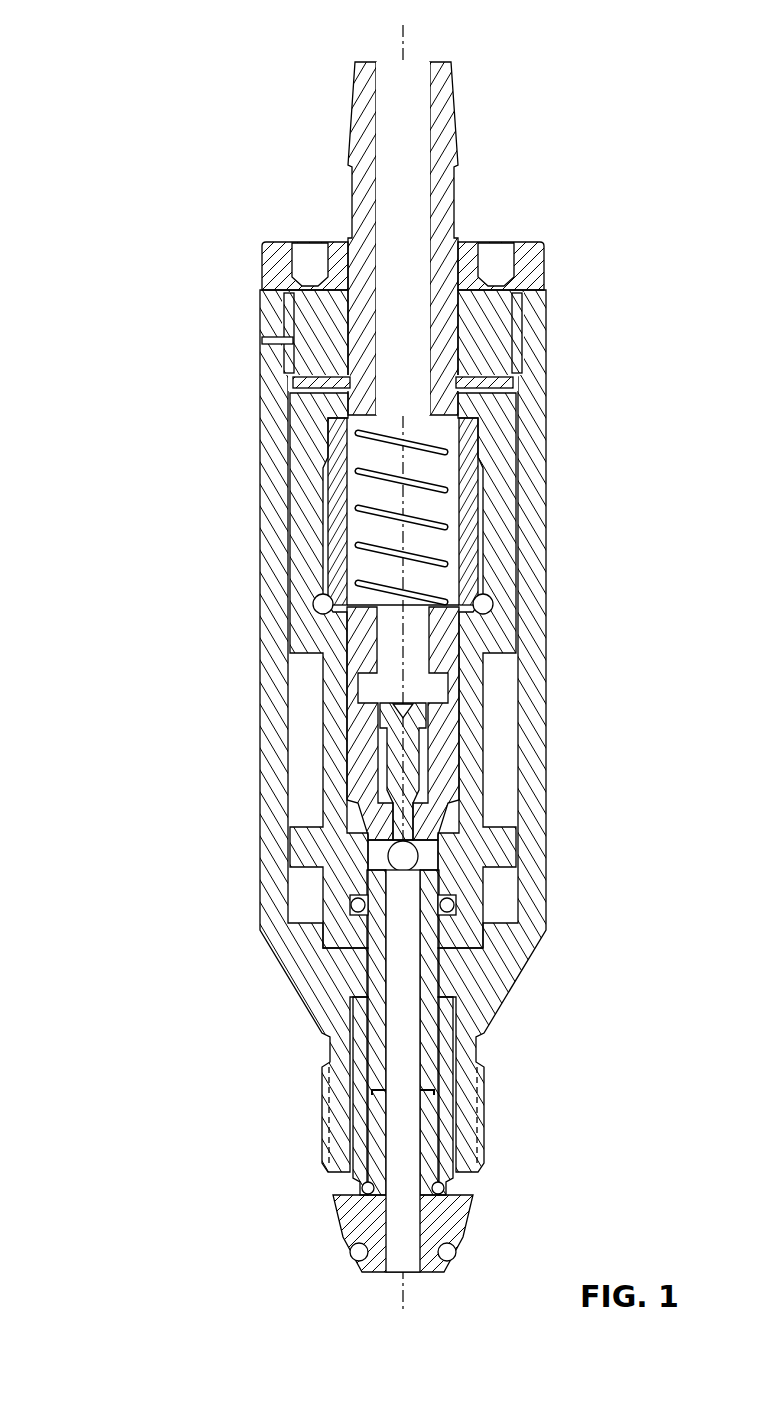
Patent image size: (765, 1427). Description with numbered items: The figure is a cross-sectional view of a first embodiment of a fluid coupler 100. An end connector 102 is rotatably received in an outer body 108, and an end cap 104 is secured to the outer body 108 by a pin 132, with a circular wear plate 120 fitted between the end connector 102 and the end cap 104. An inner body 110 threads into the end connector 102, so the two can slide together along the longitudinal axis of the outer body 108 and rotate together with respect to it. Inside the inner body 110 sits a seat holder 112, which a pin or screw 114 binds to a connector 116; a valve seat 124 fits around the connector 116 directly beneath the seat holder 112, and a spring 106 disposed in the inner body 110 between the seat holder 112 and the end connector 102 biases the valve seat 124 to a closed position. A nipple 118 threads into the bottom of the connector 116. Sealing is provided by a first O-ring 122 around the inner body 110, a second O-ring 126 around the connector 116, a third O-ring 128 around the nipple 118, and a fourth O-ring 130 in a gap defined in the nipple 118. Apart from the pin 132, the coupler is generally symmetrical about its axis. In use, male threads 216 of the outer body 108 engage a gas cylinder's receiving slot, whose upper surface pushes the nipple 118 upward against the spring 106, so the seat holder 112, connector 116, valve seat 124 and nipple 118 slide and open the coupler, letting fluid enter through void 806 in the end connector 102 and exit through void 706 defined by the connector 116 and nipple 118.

The fluid coupler 100 is at (135, 60).
The end connector 102 is at (442, 136).
The end cap 104 is at (533, 266).
The spring 106 is at (447, 492).
The outer body 108 is at (537, 500).
The inner body 110 is at (307, 635).
The seat holder 112 is at (365, 652).
The pin or screw 114 is at (410, 752).
The connector 116 is at (435, 1039).
The nipple 118 is at (447, 1221).
The circular wear plate 120 is at (519, 372).
The first O-ring 122 is at (490, 606).
The valve seat 124 is at (439, 824).
The second O-ring 126 is at (355, 903).
The third O-ring 128 is at (444, 1189).
The fourth O-ring 130 is at (350, 1252).
The pin 132 is at (270, 341).
The male threads 216 is at (318, 1137).
The void 706 is at (392, 1262).
The void 806 is at (417, 72).